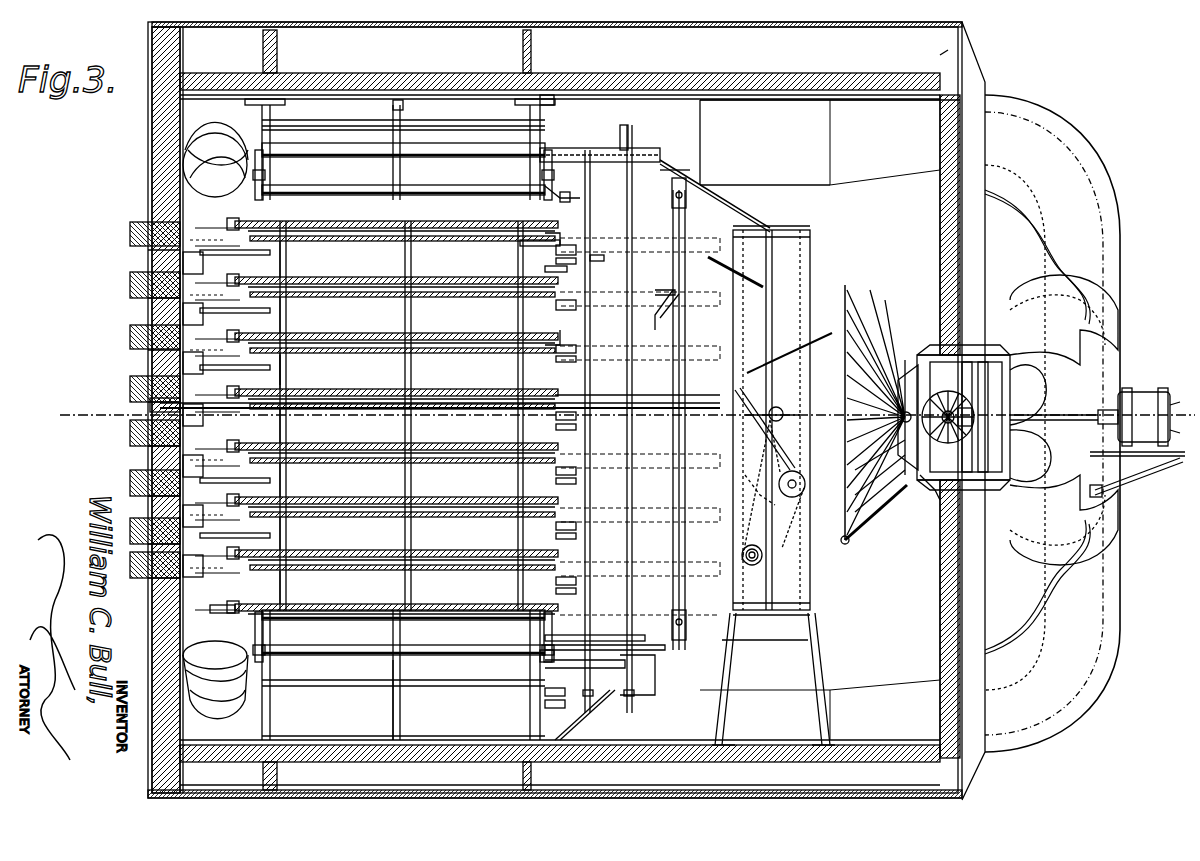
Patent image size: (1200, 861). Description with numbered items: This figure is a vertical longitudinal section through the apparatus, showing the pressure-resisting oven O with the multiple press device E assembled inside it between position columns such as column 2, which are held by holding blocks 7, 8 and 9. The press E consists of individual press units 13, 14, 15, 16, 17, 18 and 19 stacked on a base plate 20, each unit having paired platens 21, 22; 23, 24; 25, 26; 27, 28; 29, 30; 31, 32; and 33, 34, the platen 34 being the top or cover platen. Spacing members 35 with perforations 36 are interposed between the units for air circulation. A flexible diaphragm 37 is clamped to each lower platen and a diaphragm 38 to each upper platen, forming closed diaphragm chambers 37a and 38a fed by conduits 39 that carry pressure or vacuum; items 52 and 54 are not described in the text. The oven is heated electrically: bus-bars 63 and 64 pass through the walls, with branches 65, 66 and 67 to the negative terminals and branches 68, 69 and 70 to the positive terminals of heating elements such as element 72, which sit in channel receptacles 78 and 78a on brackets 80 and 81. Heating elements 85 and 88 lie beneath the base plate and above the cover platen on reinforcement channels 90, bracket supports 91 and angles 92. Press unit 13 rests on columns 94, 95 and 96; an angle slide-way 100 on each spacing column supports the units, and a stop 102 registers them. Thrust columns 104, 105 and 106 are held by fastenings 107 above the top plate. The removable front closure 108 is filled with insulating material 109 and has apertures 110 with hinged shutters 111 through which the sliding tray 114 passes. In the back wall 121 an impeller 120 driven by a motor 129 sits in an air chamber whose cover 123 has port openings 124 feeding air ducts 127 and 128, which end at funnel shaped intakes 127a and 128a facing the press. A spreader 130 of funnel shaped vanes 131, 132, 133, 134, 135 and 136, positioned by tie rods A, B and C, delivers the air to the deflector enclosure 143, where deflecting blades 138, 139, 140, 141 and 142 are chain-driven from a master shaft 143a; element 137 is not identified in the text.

The position column 2 is at (72, 405).
The holding block 7 is at (264, 149).
The holding block 8 is at (405, 92).
The holding block 9 is at (554, 102).
The individual press unit 13 is at (290, 571).
The individual press unit 14 is at (290, 517).
The individual press unit 15 is at (290, 463).
The individual press unit 16 is at (290, 409).
The individual press unit 17 is at (294, 353).
The individual press unit 18 is at (296, 297).
The individual press unit 19 is at (300, 240).
The base plate 20 is at (567, 601).
The lower platen 21 is at (565, 588).
The upper platen 22 is at (567, 546).
The lower platen 23 is at (565, 534).
The upper platen 24 is at (567, 491).
The lower platen 25 is at (565, 479).
The upper platen 26 is at (567, 435).
The lower platen 27 is at (565, 423).
The upper platen 28 is at (580, 390).
The lower platen 29 is at (575, 380).
The upper platen 30 is at (566, 358).
The lower platen 31 is at (565, 312).
The upper platen 32 is at (547, 656).
The lower platen 33 is at (566, 272).
The top or cover platen 34 is at (556, 269).
The spacing member 35 is at (395, 280).
The perforation 36 is at (490, 399).
The flexible diaphragm 37 is at (450, 292).
The diaphragm chamber 37a is at (395, 226).
The flexible diaphragm 38 is at (500, 228).
The diaphragm chamber 38a is at (440, 240).
The conduit 39 is at (234, 397).
The fitting 52 is at (602, 270).
The fitting 54 is at (567, 255).
The bus-bar 63 is at (585, 715).
The bus-bar 64 is at (626, 705).
The branch 65 is at (585, 664).
The branch 66 is at (545, 690).
The branch 67 is at (640, 700).
The branch 68 is at (595, 631).
The branch 69 is at (634, 328).
The branch 70 is at (670, 262).
The electric heating element 72 is at (678, 435).
The channel receptacle 78 is at (686, 635).
The channel receptacle 78a is at (672, 175).
The bracket 80 is at (640, 645).
The bracket 81 is at (648, 152).
The heating element 85 is at (302, 680).
The heating element 88 is at (340, 145).
The reinforcement channel 90 is at (575, 196).
The bracket support 91 is at (268, 170).
The angle 92 is at (427, 185).
The column 94 is at (268, 716).
The column 95 is at (405, 715).
The column 96 is at (545, 705).
The angle slide-way 100 is at (565, 244).
The stop 102 is at (575, 236).
The thrust column 104 is at (403, 112).
The thrust column 105 is at (403, 114).
The thrust column 106 is at (530, 106).
The fastening 107 is at (393, 105).
The removable closure or panel front 108 is at (152, 123).
The insulating material 109 is at (160, 158).
The aperture 110 is at (130, 290).
The hinged shutter 111 is at (130, 240).
The sliding tray 114 is at (648, 403).
The impeller 120 is at (932, 500).
The back wall 121 is at (940, 212).
The cover 123 is at (1030, 423).
The port opening 124 is at (1005, 400).
The air duct 127 is at (988, 598).
The funnel shaped intake 127a is at (215, 680).
The air duct 128 is at (995, 330).
The funnel shaped intake 128a is at (215, 159).
The motor 129 is at (1148, 388).
The spreader 130 is at (878, 400).
The funnel shaped vane 131 is at (870, 530).
The funnel shaped vane 132 is at (843, 545).
The funnel shaped vane 133 is at (773, 486).
The funnel shaped vane 134 is at (862, 499).
The funnel shaped vane 135 is at (860, 478).
The funnel shaped vane 136 is at (858, 462).
The arm 137 is at (925, 495).
The deflecting blade 138 is at (726, 535).
The deflecting blade 139 is at (732, 490).
The deflecting blade 140 is at (736, 392).
The deflecting blade 141 is at (772, 362).
The deflecting blade 142 is at (715, 227).
The deflector enclosure 143 is at (790, 228).
The master shaft 143a is at (745, 429).
The tie rod A is at (875, 406).
The tie rod B is at (880, 415).
The tie rod C is at (905, 370).
The multiple press device E is at (324, 370).
The oven O is at (940, 55).